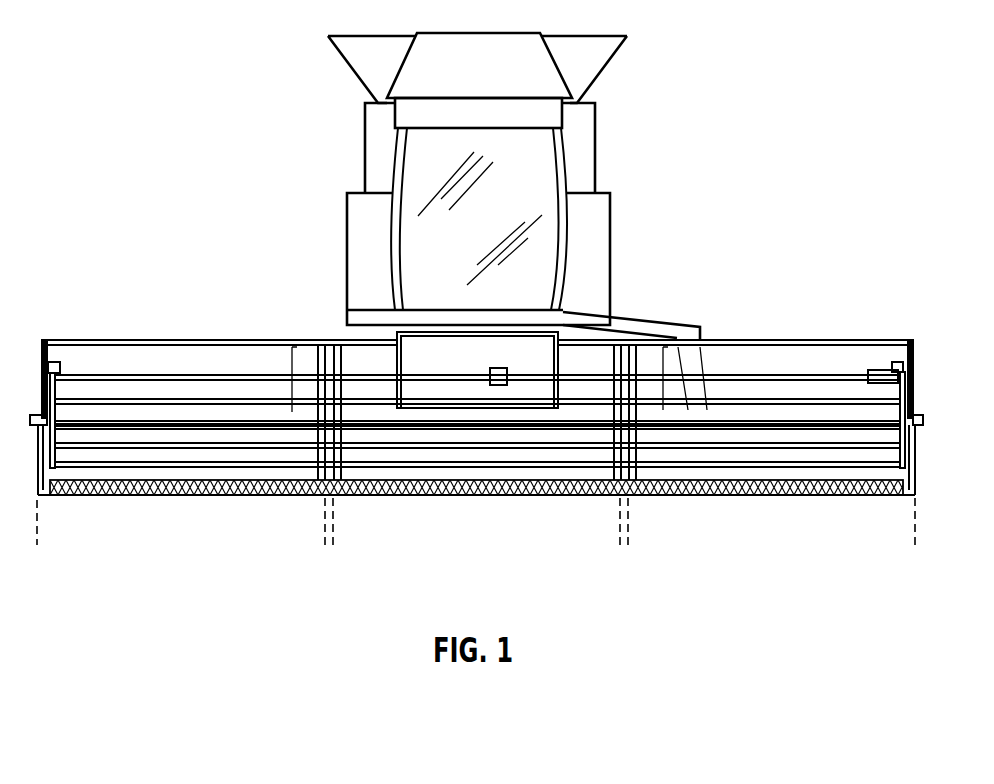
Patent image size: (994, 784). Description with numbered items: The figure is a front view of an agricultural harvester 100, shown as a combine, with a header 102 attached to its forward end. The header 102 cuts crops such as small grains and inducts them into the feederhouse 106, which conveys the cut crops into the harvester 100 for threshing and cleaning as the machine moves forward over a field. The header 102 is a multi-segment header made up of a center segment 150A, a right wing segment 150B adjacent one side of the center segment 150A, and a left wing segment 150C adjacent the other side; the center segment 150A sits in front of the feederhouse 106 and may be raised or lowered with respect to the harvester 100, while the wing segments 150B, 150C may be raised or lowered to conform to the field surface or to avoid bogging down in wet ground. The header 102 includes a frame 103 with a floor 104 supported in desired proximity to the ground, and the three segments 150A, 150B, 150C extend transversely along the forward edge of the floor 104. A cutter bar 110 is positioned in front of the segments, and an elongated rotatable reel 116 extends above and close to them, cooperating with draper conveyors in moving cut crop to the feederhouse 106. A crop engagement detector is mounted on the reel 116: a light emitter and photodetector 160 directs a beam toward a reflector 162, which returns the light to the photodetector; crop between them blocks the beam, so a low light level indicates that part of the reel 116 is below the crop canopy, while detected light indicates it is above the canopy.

The agricultural harvester 100 is at (246, 176).
The header 102 is at (99, 329).
The frame 103 is at (800, 340).
The floor 104 is at (158, 478).
The feederhouse 106 is at (540, 350).
The cutter bar 110 is at (502, 492).
The reel 116 is at (823, 443).
The light emitter and photodetector 160 is at (882, 370).
The reflector 162 is at (498, 368).
The center segment 150A is at (333, 545).
The right wing segment 150B is at (325, 545).
The left wing segment 150C is at (628, 545).